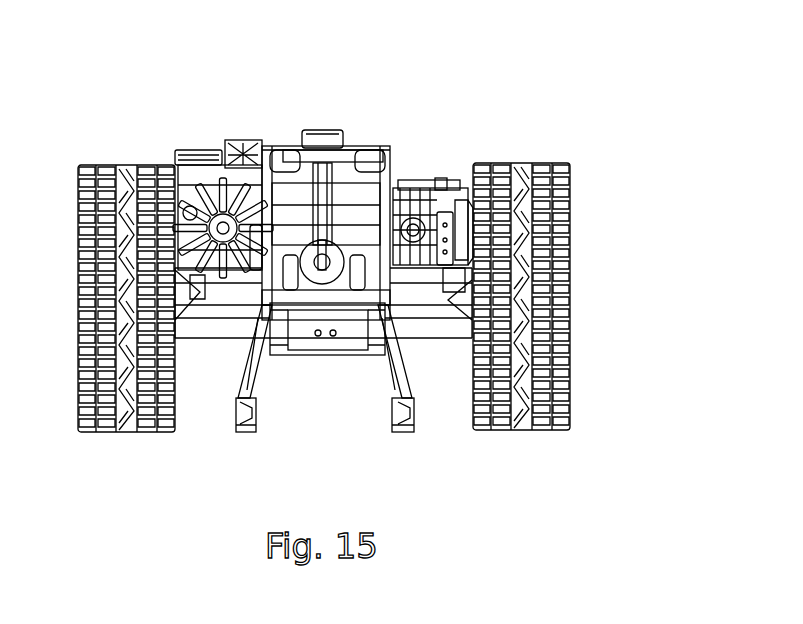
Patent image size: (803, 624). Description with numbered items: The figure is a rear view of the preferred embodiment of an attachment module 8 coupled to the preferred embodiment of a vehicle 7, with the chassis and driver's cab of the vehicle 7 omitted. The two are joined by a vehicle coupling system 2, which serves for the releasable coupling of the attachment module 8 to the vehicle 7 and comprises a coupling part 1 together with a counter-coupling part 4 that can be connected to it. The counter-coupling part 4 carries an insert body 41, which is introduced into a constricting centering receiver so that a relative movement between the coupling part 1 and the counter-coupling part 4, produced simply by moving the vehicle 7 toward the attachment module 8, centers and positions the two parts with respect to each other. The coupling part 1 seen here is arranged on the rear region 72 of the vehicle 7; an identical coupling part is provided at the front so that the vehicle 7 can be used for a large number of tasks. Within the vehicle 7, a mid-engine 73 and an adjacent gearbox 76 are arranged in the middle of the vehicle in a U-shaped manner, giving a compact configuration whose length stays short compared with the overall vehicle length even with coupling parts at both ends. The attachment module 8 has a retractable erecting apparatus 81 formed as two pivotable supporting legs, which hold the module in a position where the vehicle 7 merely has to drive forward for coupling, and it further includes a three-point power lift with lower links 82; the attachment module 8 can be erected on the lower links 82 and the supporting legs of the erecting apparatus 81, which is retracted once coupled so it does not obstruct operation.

The coupling part 1 is at (391, 81).
The vehicle coupling system 2 is at (343, 130).
The counter-coupling part 4 is at (276, 170).
The insert body 41 is at (280, 147).
The vehicle 7 is at (235, 318).
The attachment module 8 is at (218, 152).
The rear region 72 is at (318, 88).
The mid-engine 73 is at (178, 168).
The gearbox 76 is at (443, 195).
The retractable erecting apparatus 81 is at (388, 405).
The lower links 82 is at (408, 425).